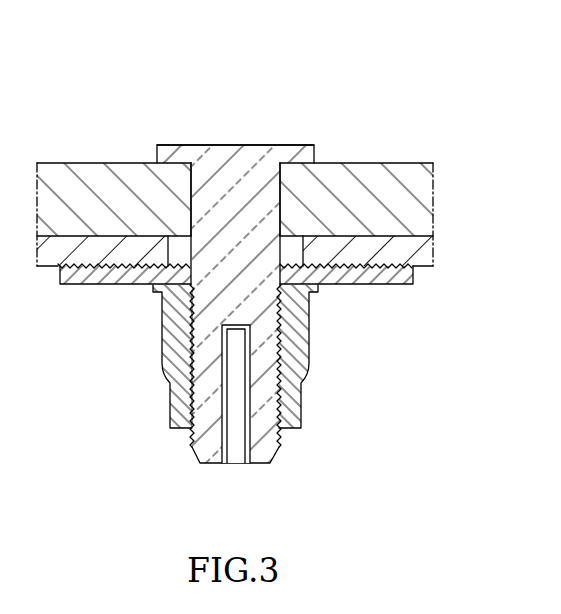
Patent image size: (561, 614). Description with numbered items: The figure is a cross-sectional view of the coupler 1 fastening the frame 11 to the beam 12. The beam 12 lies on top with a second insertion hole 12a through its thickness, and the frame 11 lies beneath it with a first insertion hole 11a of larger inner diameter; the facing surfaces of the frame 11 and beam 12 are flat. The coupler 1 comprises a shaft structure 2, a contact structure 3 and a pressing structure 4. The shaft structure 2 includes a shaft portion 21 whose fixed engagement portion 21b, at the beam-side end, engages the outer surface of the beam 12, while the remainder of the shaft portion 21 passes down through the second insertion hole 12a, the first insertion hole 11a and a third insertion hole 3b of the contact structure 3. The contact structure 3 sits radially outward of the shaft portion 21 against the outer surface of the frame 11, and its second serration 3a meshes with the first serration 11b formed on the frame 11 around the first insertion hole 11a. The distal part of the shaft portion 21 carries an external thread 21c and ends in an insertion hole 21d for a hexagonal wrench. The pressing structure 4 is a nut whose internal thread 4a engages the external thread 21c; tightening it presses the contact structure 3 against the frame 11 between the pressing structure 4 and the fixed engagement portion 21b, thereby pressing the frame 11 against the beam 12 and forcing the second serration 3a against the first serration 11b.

The coupler 1 is at (355, 82).
The shaft structure 2 is at (243, 112).
The shaft portion 21 is at (259, 465).
The fixed engagement portion 21b is at (295, 156).
The external thread 21c is at (280, 443).
The insertion hole 21d is at (234, 462).
The contact structure 3 is at (383, 286).
The second serration 3a is at (97, 276).
The third insertion hole 3b is at (320, 282).
The pressing structure 4 is at (300, 403).
The internal thread 4a is at (186, 398).
The frame 11 is at (428, 252).
The first insertion hole 11a is at (152, 276).
The first serration 11b is at (415, 270).
The beam 12 is at (430, 173).
The second insertion hole 12a is at (190, 190).